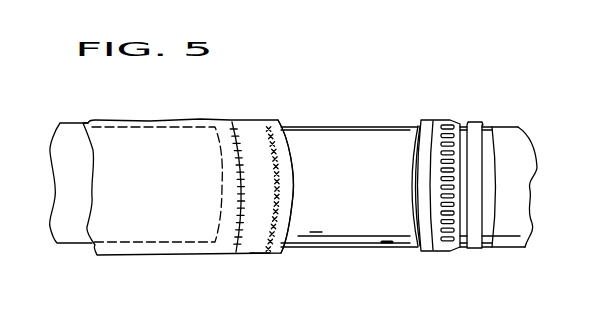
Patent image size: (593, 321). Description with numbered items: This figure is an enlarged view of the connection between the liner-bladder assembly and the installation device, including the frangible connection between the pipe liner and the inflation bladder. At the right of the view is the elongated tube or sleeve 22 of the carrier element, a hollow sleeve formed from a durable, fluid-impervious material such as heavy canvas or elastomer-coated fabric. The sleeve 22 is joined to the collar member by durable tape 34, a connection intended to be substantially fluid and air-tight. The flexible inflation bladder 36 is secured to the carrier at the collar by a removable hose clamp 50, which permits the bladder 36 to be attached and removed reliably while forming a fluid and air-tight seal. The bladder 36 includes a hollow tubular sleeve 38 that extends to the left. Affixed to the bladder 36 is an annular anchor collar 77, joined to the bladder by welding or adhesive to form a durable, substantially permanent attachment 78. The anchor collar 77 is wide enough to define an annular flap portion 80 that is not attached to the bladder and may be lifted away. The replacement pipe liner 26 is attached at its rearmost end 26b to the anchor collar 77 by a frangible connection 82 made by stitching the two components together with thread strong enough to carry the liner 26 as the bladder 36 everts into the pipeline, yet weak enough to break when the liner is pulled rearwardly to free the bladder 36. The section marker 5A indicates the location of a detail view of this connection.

The inflation bladder 36 is at (70, 153).
The replacement pipe liner 26 is at (138, 148).
The rearmost end of the liner 26b is at (230, 125).
The annular flap portion 80 is at (233, 193).
The frangible connection 82 is at (235, 248).
The permanent attachment 78 is at (277, 177).
The annular collar 77 is at (257, 243).
The hollow tubular sleeve 38 is at (338, 235).
The section marker 5A is at (387, 243).
The hose clamp 50 is at (447, 123).
The durable tape 34 is at (480, 132).
The elongated tube or sleeve 22 is at (518, 188).